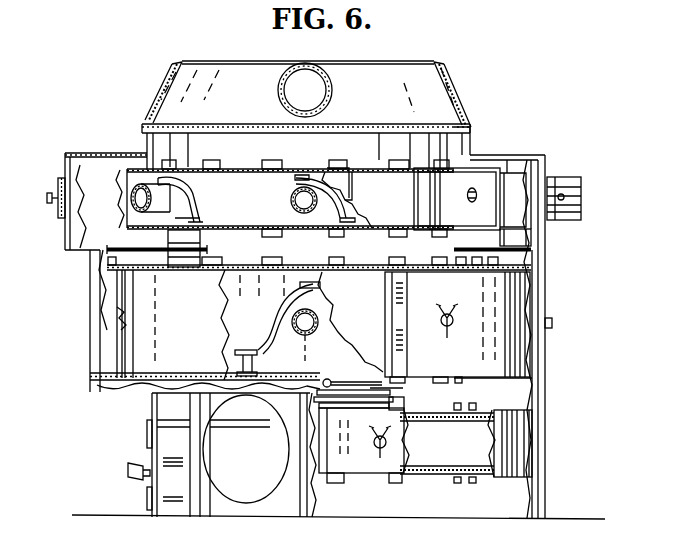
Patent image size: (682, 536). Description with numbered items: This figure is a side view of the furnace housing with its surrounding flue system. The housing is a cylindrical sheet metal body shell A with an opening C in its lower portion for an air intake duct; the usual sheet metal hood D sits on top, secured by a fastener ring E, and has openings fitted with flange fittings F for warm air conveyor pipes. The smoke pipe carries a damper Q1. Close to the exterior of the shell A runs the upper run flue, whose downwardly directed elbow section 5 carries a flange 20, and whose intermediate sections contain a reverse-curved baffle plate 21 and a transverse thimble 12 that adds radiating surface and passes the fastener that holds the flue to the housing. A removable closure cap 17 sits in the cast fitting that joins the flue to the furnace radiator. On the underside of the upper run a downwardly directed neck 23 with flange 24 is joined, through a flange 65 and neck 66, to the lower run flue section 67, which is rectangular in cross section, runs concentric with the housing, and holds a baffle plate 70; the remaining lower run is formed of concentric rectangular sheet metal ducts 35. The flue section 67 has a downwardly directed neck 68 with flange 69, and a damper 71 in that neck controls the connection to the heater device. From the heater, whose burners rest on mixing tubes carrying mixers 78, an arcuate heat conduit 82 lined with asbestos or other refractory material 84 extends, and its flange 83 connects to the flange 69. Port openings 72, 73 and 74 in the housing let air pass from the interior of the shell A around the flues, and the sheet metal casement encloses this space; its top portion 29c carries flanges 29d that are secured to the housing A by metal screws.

The sheet metal hood D is at (222, 63).
The flange fitting F is at (329, 83).
The fastener ring E is at (252, 127).
The body shell A is at (143, 137).
The flange 29d is at (470, 140).
The top portion of casement 29c is at (486, 155).
The flange 20 is at (529, 243).
The damper Q1 is at (562, 196).
The elbow section 5 is at (519, 237).
The port opening 72 is at (275, 163).
The transverse thimble 12 is at (165, 204).
The baffle plate 21 is at (177, 197).
The removable closure cap 17 is at (58, 215).
The neck 23 is at (140, 237).
The flange 24 is at (223, 241).
The flange 65 is at (192, 261).
The port opening 73 is at (282, 261).
The neck 66 is at (148, 263).
The lower run flue section 67 is at (167, 343).
The baffle plate 70 is at (268, 332).
The sheet metal duct 35 is at (481, 372).
The neck 68 is at (397, 390).
The damper 71 is at (344, 388).
The flange 69 is at (309, 395).
The opening C is at (218, 455).
The mixer 78 is at (133, 482).
The flange 83 is at (362, 409).
The port opening 74 is at (334, 482).
The insulatory material 84 is at (422, 467).
The heat conduit 82 is at (512, 412).